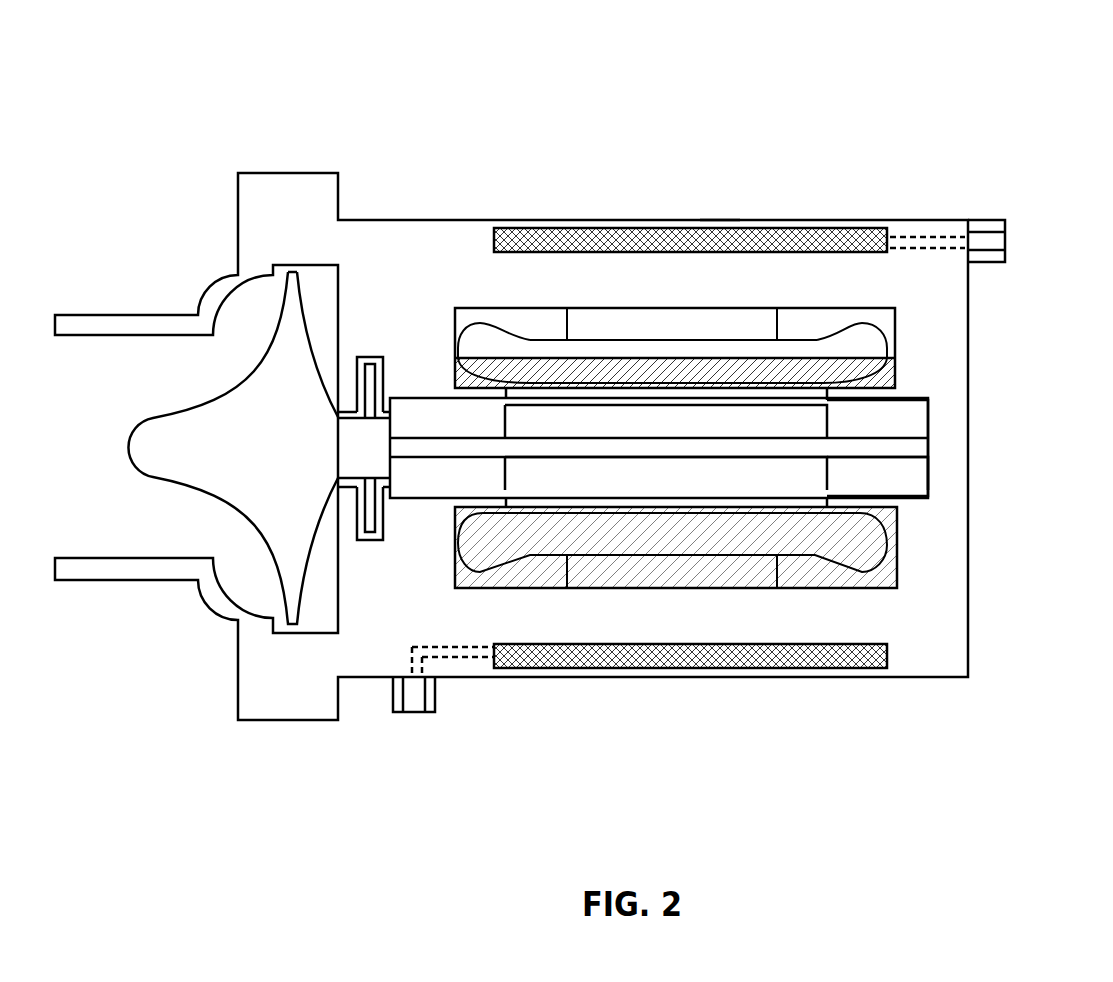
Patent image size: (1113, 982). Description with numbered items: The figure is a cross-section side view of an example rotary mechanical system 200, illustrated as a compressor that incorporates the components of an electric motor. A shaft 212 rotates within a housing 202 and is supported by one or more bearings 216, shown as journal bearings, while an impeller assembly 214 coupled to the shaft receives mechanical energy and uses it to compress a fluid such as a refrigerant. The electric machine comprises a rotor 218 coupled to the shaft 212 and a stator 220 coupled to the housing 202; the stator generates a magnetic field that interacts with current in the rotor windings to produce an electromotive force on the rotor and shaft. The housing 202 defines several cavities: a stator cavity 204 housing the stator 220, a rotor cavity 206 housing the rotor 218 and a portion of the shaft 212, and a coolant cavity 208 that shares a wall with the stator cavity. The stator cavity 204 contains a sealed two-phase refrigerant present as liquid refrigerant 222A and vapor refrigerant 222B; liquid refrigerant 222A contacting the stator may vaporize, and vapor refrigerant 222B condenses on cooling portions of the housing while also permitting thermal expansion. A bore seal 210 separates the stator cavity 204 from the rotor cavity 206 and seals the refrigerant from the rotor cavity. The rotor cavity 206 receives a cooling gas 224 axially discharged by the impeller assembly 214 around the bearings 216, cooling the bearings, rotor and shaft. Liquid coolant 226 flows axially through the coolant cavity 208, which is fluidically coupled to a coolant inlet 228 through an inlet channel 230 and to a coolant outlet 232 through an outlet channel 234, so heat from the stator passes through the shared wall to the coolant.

The rotary mechanical system 200 is at (1046, 66).
The housing 202 is at (413, 238).
The stator cavity 204 is at (897, 577).
The rotor cavity 206 is at (928, 465).
The coolant cavity 208 is at (715, 227).
The bore seal 210 is at (577, 392).
The shaft 212 is at (922, 447).
The impeller assembly 214 is at (278, 390).
The bearings 216 is at (370, 382).
The rotor 218 is at (820, 425).
The stator 220 is at (487, 347).
The liquid refrigerant 222A is at (885, 522).
The vapor refrigerant 222B is at (567, 318).
The cooling gas 224 is at (910, 422).
The liquid coolant 226 is at (778, 236).
The coolant inlet 228 is at (997, 237).
The inlet channel 230 is at (903, 238).
The coolant outlet 232 is at (412, 700).
The outlet channel 234 is at (452, 655).